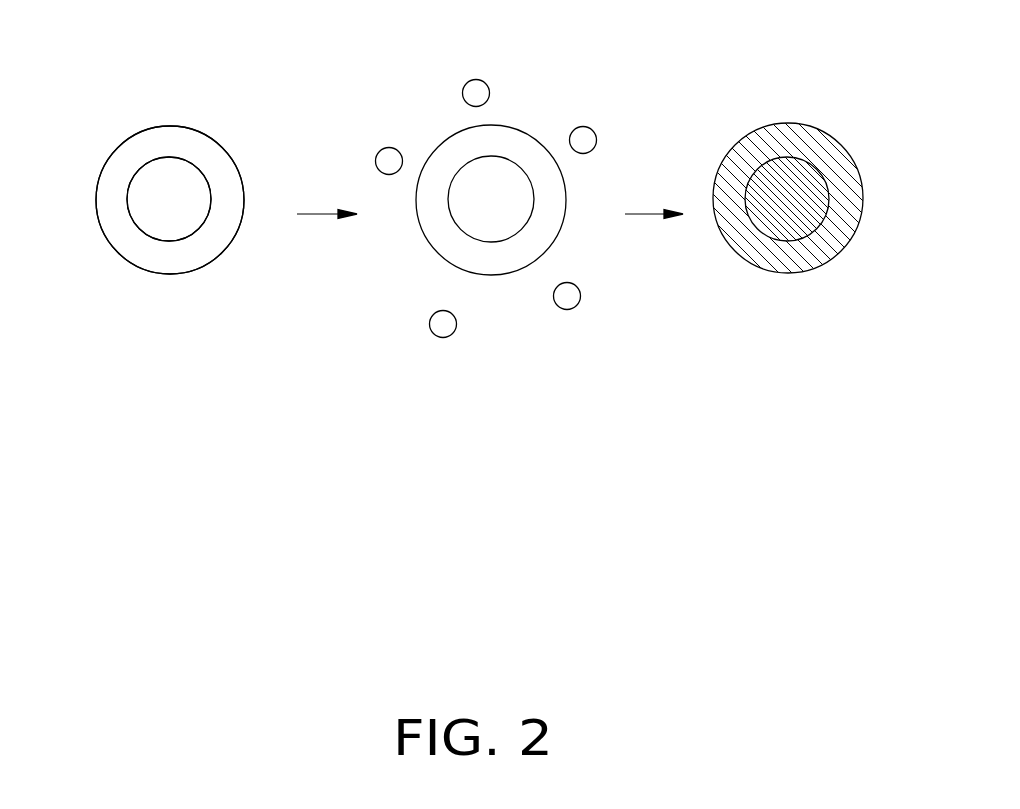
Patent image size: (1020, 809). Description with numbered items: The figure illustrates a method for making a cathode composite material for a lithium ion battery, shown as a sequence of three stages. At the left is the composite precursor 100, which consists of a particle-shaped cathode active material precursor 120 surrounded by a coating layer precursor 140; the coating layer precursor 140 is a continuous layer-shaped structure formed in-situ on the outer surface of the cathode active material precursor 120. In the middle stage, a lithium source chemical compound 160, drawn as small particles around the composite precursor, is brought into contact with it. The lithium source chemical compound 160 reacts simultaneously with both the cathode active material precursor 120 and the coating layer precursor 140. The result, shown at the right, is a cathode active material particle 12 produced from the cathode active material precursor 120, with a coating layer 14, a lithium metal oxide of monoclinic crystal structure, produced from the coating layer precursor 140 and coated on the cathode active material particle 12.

The composite precursor 100 is at (205, 97).
The cathode active material precursor 120 is at (162, 177).
The coating layer precursor 140 is at (175, 257).
The lithium source chemical compound 160 is at (476, 80).
The cathode active material particle 12 is at (787, 172).
The coating layer 14 is at (798, 255).